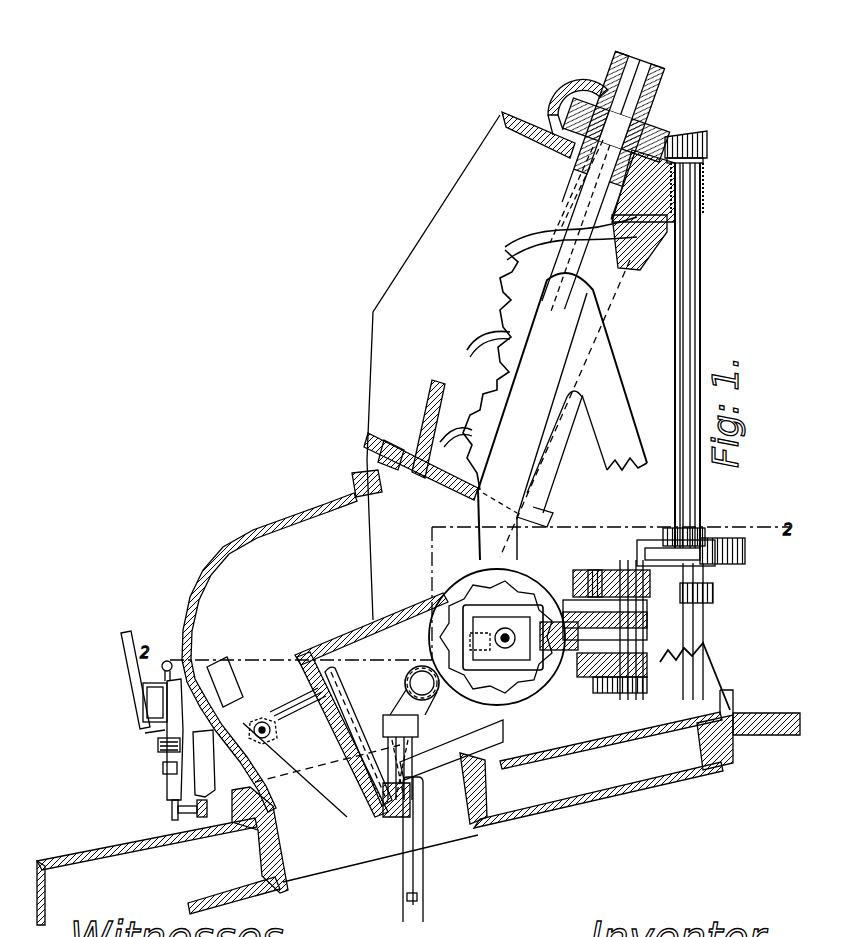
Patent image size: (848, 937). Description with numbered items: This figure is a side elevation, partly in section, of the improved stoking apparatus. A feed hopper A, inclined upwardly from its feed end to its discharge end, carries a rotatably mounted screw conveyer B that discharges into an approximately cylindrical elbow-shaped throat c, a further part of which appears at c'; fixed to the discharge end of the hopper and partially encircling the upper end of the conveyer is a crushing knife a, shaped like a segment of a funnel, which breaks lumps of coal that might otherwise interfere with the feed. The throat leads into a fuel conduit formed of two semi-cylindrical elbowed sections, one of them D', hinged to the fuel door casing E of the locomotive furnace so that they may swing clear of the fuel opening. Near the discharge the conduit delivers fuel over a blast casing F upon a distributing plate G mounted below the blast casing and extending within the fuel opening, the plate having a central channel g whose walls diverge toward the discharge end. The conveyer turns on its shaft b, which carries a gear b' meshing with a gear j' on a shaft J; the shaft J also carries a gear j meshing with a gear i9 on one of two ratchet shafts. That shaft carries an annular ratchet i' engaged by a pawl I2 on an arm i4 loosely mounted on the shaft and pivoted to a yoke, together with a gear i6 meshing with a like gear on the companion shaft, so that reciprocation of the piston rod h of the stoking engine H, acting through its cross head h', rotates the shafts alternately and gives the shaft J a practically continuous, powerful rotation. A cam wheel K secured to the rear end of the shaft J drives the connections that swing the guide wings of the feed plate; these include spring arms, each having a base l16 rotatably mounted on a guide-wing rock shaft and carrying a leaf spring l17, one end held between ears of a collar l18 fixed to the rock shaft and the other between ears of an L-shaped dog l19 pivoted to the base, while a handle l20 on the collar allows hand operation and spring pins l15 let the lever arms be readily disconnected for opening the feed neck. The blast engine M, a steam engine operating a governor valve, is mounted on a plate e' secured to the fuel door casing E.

The feed hopper A is at (395, 258).
The screw conveyer B is at (512, 248).
The shaft of the screw conveyer b is at (596, 174).
The gear b' is at (569, 141).
The shaft J is at (675, 350).
The gear j' is at (691, 130).
The gear j is at (691, 614).
The throat c is at (405, 465).
The collar flange c' is at (422, 514).
The crushing knife a is at (434, 392).
The fuel conduit section D' is at (253, 652).
The cam wheel K is at (358, 736).
The L-shaped dog l19 is at (183, 667).
The handle l20 is at (160, 662).
The leaf spring l17 is at (145, 700).
The collar l18 is at (162, 762).
The spring pins l15 is at (174, 808).
The base of spring arm l16 is at (221, 768).
The blast casing F is at (233, 807).
The blast engine M is at (406, 683).
The plate e' is at (451, 743).
The distributing plate G is at (405, 905).
The central channel g is at (413, 862).
The fuel door casing E is at (503, 732).
The stoking engine H is at (497, 637).
The piston rod h is at (505, 666).
The cross head h' is at (508, 676).
The annular ratchet i' is at (446, 631).
The gear i9 is at (590, 590).
The pawl I2 is at (640, 612).
The gear i6 is at (600, 678).
The arm i4 is at (559, 636).